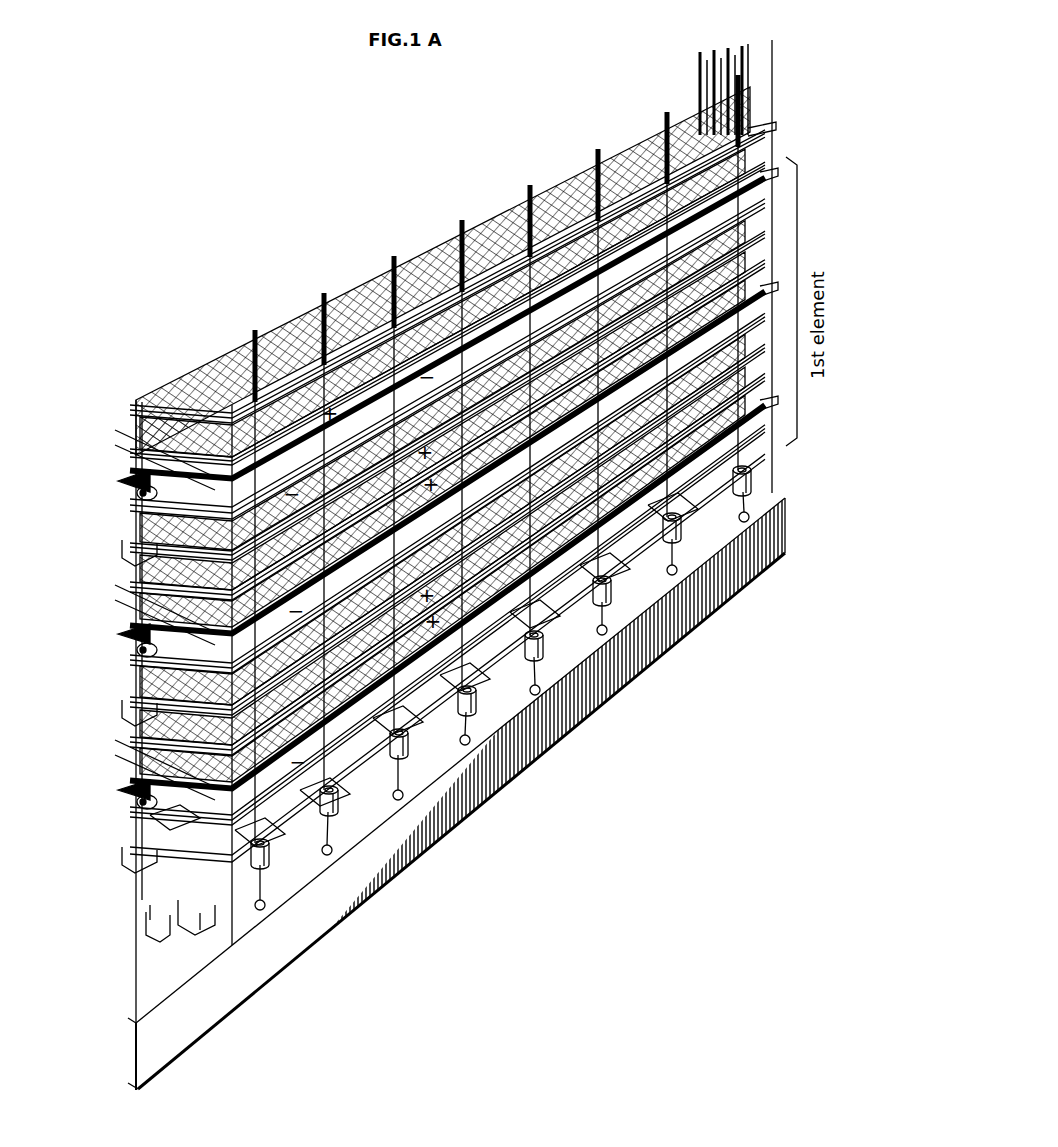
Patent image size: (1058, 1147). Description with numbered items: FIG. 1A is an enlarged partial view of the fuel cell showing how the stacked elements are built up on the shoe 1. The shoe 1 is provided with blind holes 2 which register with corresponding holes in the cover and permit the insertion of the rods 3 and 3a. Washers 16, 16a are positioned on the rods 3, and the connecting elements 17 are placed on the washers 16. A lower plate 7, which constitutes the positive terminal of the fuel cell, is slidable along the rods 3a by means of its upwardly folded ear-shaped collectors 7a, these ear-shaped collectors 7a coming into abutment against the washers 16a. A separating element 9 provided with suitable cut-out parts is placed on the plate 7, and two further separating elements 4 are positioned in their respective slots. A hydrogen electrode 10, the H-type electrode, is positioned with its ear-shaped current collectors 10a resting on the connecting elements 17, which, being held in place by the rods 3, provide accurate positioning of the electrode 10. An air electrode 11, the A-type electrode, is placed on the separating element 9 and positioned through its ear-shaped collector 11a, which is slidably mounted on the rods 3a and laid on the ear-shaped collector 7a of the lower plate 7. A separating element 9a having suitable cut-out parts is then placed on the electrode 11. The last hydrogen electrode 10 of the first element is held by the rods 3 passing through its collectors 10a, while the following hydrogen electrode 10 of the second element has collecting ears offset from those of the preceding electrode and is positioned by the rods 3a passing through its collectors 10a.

The shoe 1 is at (238, 975).
The holes 2 is at (262, 912).
The rods 3 is at (598, 137).
The rods 3a is at (668, 95).
The separating elements 4 is at (137, 493).
The lower plate 7 is at (250, 832).
The ear-shaped collectors 7a is at (385, 738).
The separating element 9 is at (128, 752).
The separating element 9a is at (128, 603).
The hydrogen electrode 10 is at (128, 455).
The ear-shaped current collectors 10a is at (150, 814).
The air electrode 11 is at (128, 420).
The ear-shaped collector 11a is at (478, 682).
The washers 16 is at (262, 868).
The washers 16a is at (400, 758).
The connecting elements 17 is at (320, 840).